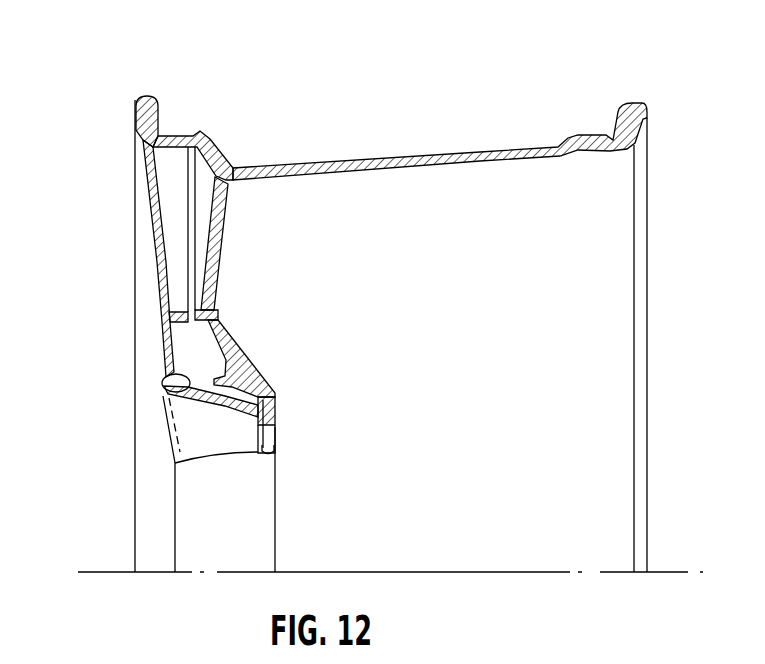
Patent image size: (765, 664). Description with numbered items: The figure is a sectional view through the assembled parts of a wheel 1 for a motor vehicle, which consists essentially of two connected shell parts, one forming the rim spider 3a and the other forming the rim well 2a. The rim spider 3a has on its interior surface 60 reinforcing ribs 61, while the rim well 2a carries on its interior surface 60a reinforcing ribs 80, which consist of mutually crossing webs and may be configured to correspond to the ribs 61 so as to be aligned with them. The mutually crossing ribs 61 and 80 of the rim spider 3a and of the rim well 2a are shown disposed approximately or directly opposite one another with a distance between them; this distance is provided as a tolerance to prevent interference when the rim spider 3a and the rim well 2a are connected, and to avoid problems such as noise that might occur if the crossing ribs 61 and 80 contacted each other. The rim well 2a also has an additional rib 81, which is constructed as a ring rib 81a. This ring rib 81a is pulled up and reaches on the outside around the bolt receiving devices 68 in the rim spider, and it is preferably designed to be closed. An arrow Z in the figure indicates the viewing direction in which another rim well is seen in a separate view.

The wheel 1 is at (392, 76).
The rim well 2a is at (222, 212).
The rim spider 3a is at (148, 160).
The interior surface 60 is at (170, 186).
The interior surface 60a is at (222, 162).
The reinforcing ribs 61 is at (165, 328).
The bolt receiving devices 68 is at (163, 373).
The reinforcing ribs 80 is at (205, 316).
The additional rib 81 is at (265, 376).
The ring rib 81a is at (228, 360).
The direction of arrow Z is at (187, 231).